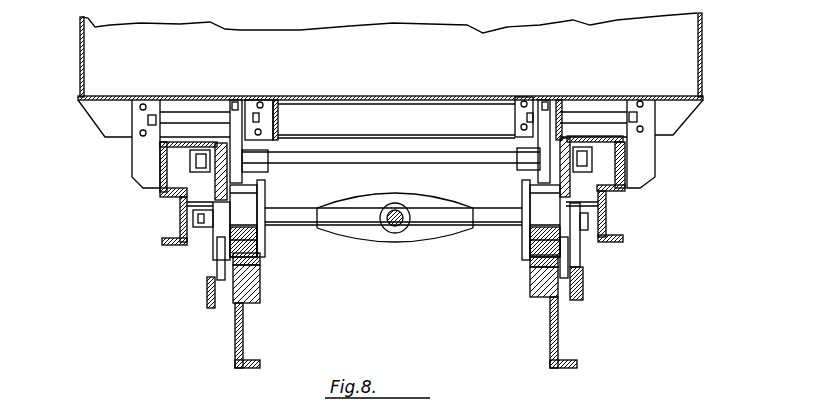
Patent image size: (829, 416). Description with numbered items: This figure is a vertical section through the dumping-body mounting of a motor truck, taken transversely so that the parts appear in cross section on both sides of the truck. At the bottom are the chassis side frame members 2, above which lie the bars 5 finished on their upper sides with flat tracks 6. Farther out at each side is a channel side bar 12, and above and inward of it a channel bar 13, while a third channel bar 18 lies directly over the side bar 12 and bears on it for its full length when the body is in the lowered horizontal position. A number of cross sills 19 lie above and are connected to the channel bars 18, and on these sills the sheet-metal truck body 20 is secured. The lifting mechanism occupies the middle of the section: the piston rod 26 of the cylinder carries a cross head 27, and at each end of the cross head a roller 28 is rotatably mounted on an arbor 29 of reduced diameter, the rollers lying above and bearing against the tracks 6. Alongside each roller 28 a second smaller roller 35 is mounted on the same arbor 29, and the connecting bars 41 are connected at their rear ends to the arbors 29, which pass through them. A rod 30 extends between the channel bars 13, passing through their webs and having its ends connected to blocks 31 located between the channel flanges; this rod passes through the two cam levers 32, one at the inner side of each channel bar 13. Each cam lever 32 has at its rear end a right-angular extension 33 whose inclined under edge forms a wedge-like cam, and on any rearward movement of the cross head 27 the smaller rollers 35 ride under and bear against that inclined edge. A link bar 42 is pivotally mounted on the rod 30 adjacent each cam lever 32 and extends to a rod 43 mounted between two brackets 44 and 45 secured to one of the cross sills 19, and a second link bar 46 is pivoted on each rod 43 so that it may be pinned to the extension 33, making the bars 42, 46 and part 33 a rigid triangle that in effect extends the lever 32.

The chassis side frame member 2 is at (235, 327).
The bar 5 is at (260, 282).
The track 6 is at (250, 260).
The side bar 12 is at (212, 237).
The channel bar 13 is at (205, 177).
The third channel bar 18 is at (163, 168).
The cross sill 19 is at (408, 117).
The truck body 20 is at (705, 47).
The piston rod 26 is at (392, 235).
The cross head 27 is at (443, 226).
The roller 28 is at (257, 245).
The arbor 29 is at (210, 232).
The rod 30 is at (367, 160).
The block 31 is at (195, 178).
The cam lever 32 is at (233, 192).
The extension 33 is at (223, 282).
The second smaller roller 35 is at (212, 245).
The connecting bar 41 is at (208, 292).
The link bar 42 is at (258, 133).
The rod 43 is at (185, 120).
The bracket 44 is at (280, 97).
The bracket 45 is at (142, 148).
The second link bar 46 is at (237, 112).